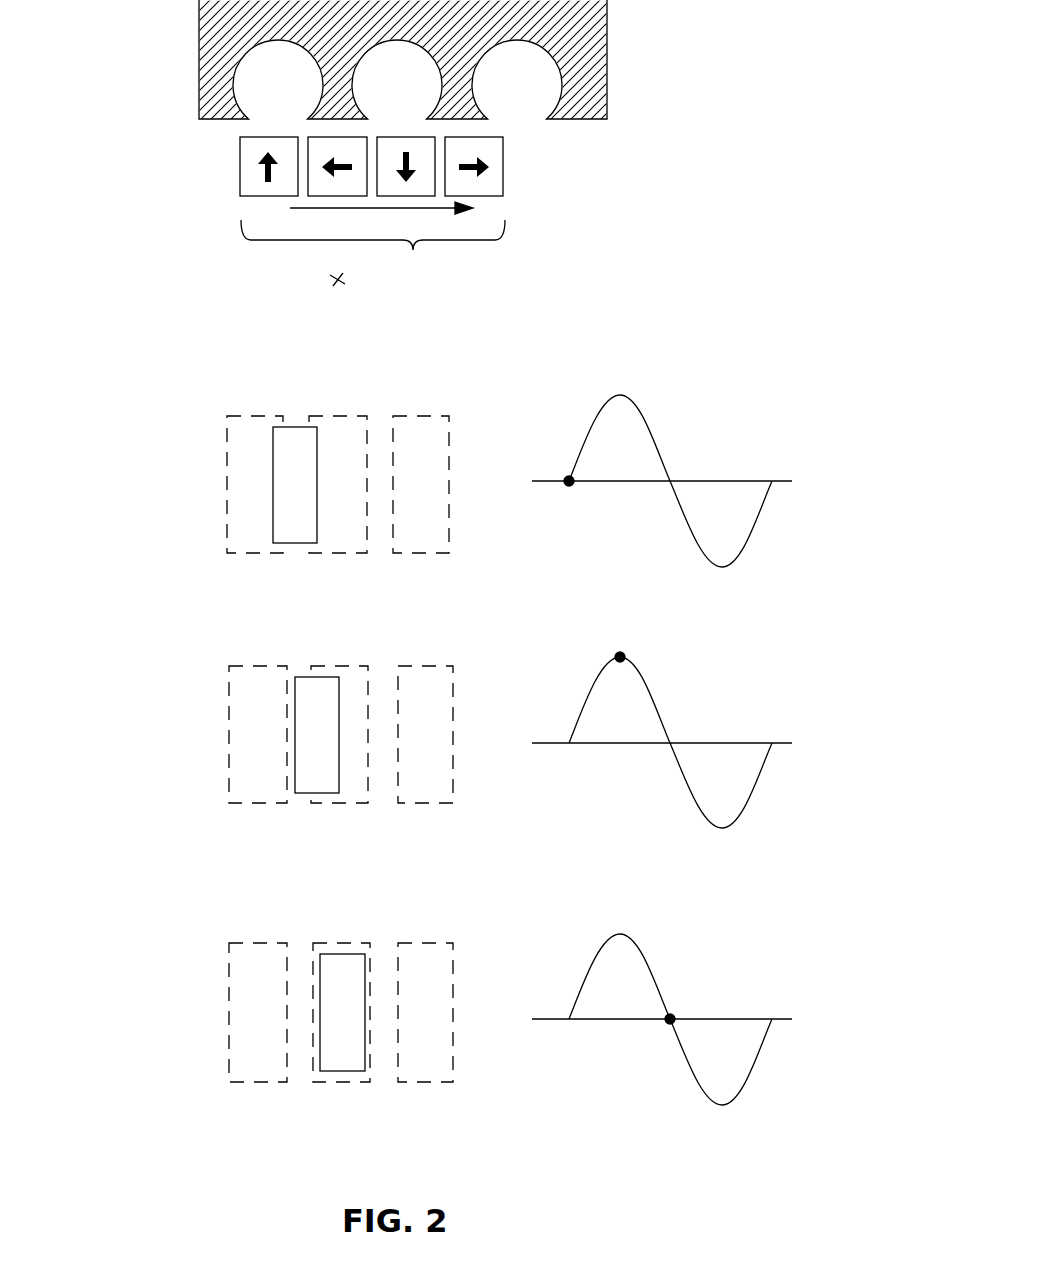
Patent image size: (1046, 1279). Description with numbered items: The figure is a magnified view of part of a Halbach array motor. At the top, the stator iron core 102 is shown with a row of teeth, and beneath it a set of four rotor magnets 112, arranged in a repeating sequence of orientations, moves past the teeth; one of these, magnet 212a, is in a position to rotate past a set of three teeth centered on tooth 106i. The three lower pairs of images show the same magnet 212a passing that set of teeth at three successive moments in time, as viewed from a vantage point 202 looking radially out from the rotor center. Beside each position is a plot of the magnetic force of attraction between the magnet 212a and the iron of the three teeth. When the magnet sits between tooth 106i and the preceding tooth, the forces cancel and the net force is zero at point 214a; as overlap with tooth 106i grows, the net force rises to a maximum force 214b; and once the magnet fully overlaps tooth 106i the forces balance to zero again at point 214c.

The iron core 102 is at (607, 50).
The tooth 106i is at (360, 110).
The set of magnets 112 is at (373, 244).
The vantage point 202 is at (326, 274).
The magnet 212a is at (240, 186).
The point of zero net force 214a is at (569, 481).
The maximum force 214b is at (620, 657).
The point of zero net force 214c is at (670, 1019).